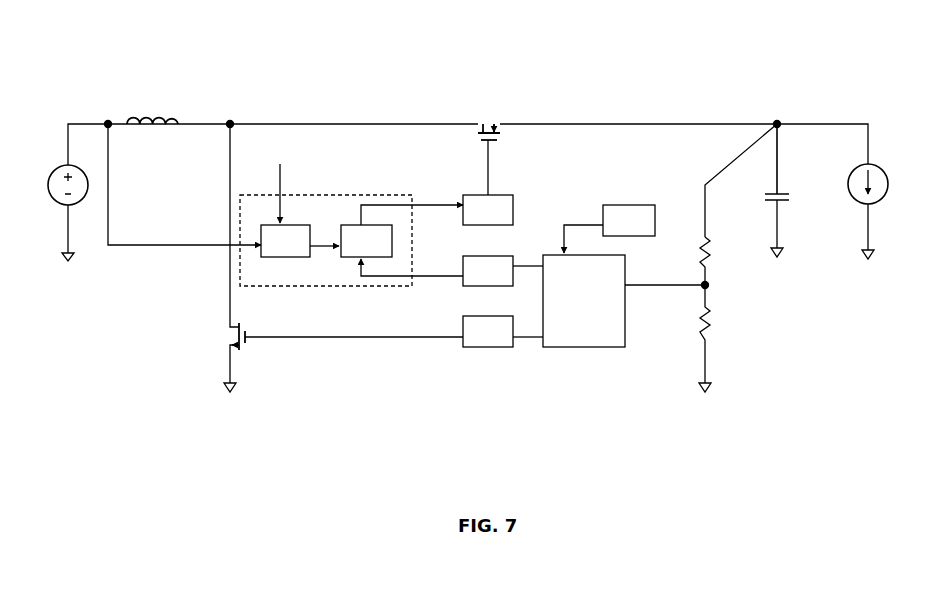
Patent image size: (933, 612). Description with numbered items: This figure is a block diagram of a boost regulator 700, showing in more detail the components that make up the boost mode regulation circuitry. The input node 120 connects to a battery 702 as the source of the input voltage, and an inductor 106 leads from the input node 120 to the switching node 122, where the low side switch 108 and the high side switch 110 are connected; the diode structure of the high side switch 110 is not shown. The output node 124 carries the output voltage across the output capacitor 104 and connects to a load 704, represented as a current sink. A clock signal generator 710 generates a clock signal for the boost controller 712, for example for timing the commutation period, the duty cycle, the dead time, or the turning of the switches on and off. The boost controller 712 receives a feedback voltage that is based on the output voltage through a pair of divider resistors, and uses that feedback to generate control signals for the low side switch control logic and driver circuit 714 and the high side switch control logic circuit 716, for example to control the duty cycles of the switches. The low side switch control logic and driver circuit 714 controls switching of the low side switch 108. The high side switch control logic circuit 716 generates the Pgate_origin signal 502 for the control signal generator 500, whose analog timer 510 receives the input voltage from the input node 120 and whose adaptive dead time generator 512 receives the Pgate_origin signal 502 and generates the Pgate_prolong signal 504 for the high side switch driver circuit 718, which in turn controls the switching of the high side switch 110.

The boost regulator 700 is at (468, 256).
The input node 120 is at (108, 103).
The inductor 106 is at (170, 103).
The switching node 122 is at (240, 103).
The output node 124 is at (783, 103).
The battery 702 is at (84, 207).
The load 704 is at (883, 208).
The output capacitor 104 is at (798, 212).
The high side switch 110 is at (502, 147).
The low side switch 108 is at (219, 327).
The control signal generator 500 is at (326, 240).
The analog timer 510 is at (285, 241).
The adaptive dead time generator 512 is at (366, 241).
The Pgate_prolong signal 504 is at (388, 205).
The Pgate_origin signal 502 is at (388, 276).
The high side switch driver circuit 718 is at (488, 210).
The high side switch control logic circuit 716 is at (488, 271).
The low side switch control logic and driver circuit 714 is at (488, 331).
The clock signal generator 710 is at (629, 220).
The boost controller 712 is at (584, 301).